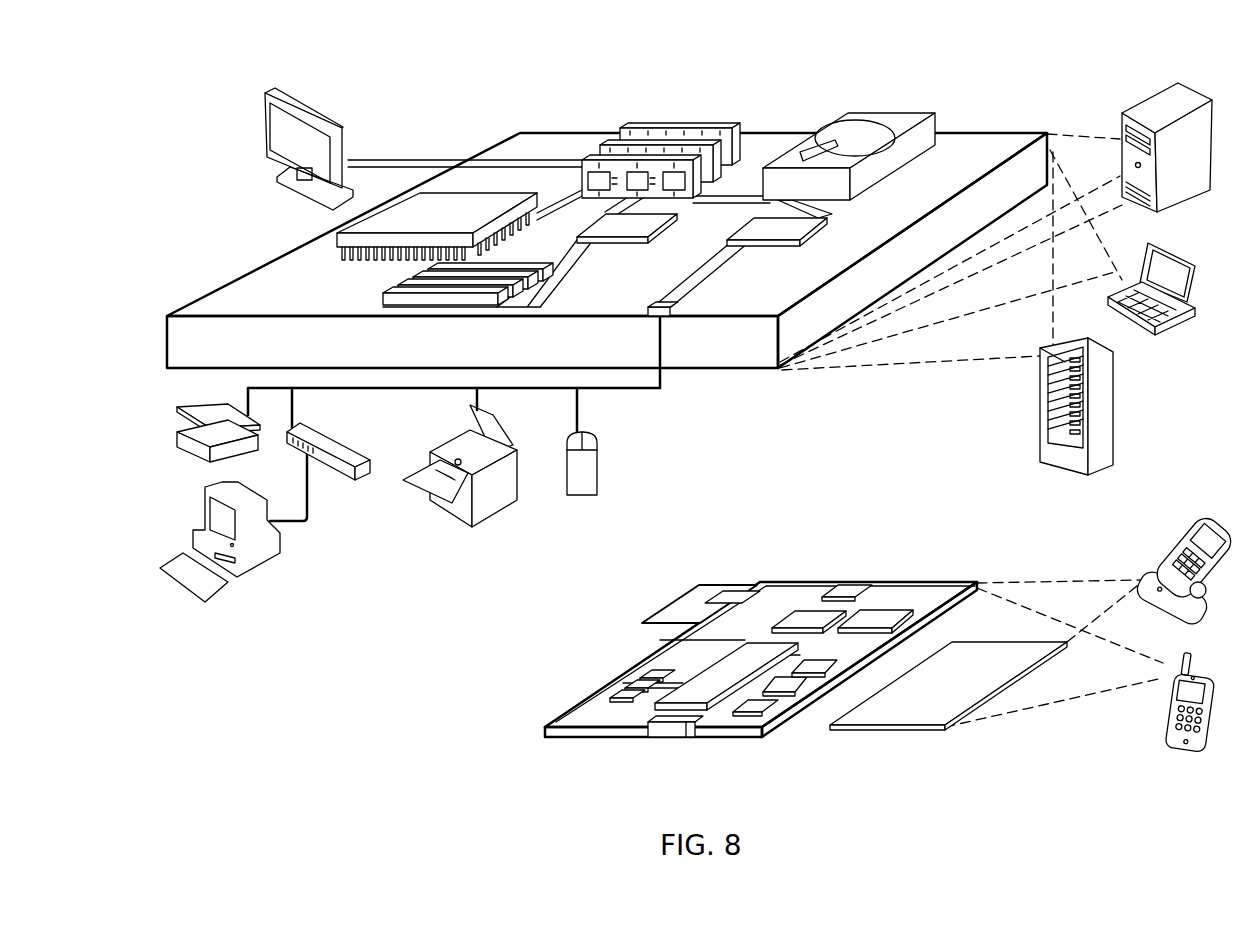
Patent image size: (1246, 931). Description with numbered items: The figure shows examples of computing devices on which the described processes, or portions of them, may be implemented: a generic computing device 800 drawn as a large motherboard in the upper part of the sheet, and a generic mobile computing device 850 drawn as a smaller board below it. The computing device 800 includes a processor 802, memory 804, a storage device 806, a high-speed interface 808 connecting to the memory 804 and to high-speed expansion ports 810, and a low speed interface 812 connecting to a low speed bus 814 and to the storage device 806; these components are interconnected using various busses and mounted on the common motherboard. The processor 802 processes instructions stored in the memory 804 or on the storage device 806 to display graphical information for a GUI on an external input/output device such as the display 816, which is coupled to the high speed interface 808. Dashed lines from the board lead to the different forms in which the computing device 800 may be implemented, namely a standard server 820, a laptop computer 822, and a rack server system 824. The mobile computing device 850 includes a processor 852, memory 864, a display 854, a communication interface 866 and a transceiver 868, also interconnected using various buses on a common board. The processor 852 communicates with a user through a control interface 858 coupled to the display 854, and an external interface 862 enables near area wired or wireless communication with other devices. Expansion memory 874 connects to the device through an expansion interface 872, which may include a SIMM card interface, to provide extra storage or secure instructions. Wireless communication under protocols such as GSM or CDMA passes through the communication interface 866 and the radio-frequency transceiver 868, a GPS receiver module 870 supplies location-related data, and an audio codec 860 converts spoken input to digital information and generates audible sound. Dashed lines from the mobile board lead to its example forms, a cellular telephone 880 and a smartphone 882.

The computing device 800 is at (449, 108).
The processor 802 is at (337, 243).
The memory 804 is at (640, 128).
The storage device 806 is at (847, 118).
The high-speed interface 808 is at (607, 227).
The high-speed expansion ports 810 is at (400, 285).
The low speed interface 812 is at (778, 227).
The low speed bus 814 is at (668, 318).
The display 816 is at (262, 93).
The standard server 820 is at (1122, 122).
The laptop computer 822 is at (1150, 247).
The rack server system 824 is at (1040, 425).
The mobile computing device 850 is at (744, 556).
The processor 852 is at (705, 712).
The display 854 is at (944, 727).
The control interface 858 is at (800, 690).
The audio codec 860 is at (818, 676).
The external interface 862 is at (673, 728).
The memory 864 is at (624, 690).
The communication interface 866 is at (806, 615).
The transceiver 868 is at (878, 612).
The GPS receiver module 870 is at (847, 586).
The expansion interface 872 is at (740, 592).
The expansion memory 874 is at (682, 593).
The cellular telephone 880 is at (1183, 533).
The smartphone 882 is at (1172, 656).